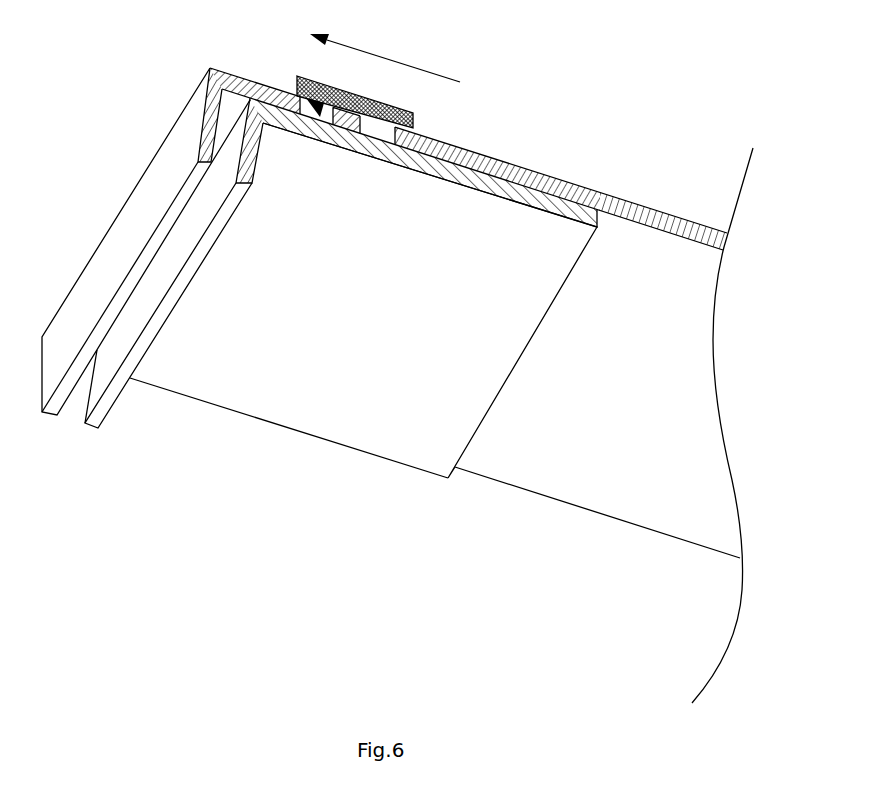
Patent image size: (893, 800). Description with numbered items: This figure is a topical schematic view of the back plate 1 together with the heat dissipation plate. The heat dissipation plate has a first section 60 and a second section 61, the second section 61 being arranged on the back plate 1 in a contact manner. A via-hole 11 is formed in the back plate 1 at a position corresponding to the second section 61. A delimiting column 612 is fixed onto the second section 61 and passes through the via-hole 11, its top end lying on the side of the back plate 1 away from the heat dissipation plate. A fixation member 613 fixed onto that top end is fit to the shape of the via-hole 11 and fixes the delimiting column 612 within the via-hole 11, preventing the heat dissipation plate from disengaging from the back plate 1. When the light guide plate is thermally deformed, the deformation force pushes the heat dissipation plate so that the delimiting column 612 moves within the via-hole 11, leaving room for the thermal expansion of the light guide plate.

The back plate 1 is at (384, 241).
The via-hole 11 is at (358, 77).
The first section 60 is at (202, 226).
The second section 61 is at (488, 226).
The delimiting column 612 is at (343, 123).
The fixation member 613 is at (397, 103).